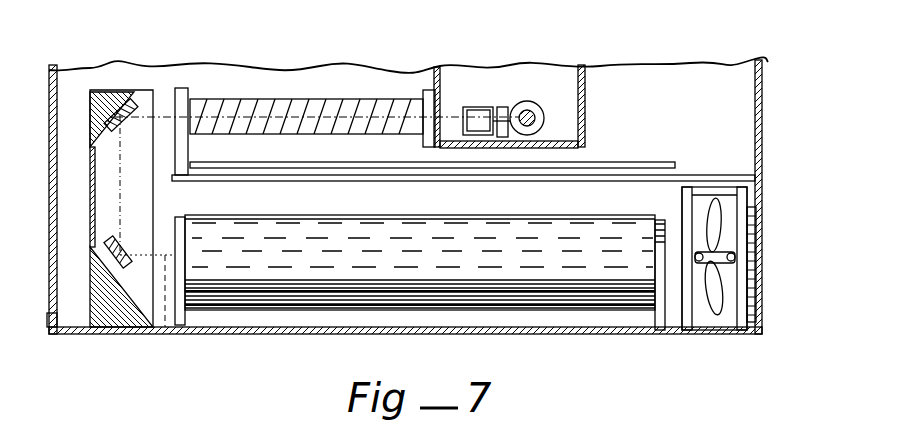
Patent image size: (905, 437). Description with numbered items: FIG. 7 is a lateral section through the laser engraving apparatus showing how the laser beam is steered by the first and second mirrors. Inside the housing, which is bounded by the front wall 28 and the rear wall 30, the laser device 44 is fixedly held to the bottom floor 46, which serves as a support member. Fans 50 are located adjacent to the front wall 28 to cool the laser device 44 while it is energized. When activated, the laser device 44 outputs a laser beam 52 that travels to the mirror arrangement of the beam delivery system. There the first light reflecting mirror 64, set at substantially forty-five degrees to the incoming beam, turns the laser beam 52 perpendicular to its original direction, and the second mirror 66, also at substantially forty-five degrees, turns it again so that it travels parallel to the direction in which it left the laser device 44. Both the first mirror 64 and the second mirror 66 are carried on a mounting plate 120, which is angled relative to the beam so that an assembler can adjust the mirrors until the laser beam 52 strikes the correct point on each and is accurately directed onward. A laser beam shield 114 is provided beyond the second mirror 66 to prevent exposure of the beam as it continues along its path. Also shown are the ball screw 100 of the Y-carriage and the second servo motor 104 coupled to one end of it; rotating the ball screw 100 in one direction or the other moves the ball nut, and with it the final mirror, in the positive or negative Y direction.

The front wall 28 is at (755, 131).
The rear wall 30 is at (57, 158).
The laser device 44 is at (582, 278).
The bottom floor 46 is at (317, 333).
The fans 50 is at (712, 305).
The laser beam 52 is at (162, 313).
The first light reflecting mirror 64 is at (112, 325).
The second mirror 66 is at (120, 90).
The ball screw 100 is at (527, 112).
The second servo motor 104 is at (518, 108).
The laser beam shield 114 is at (307, 108).
The mounting plate 120 is at (97, 90).